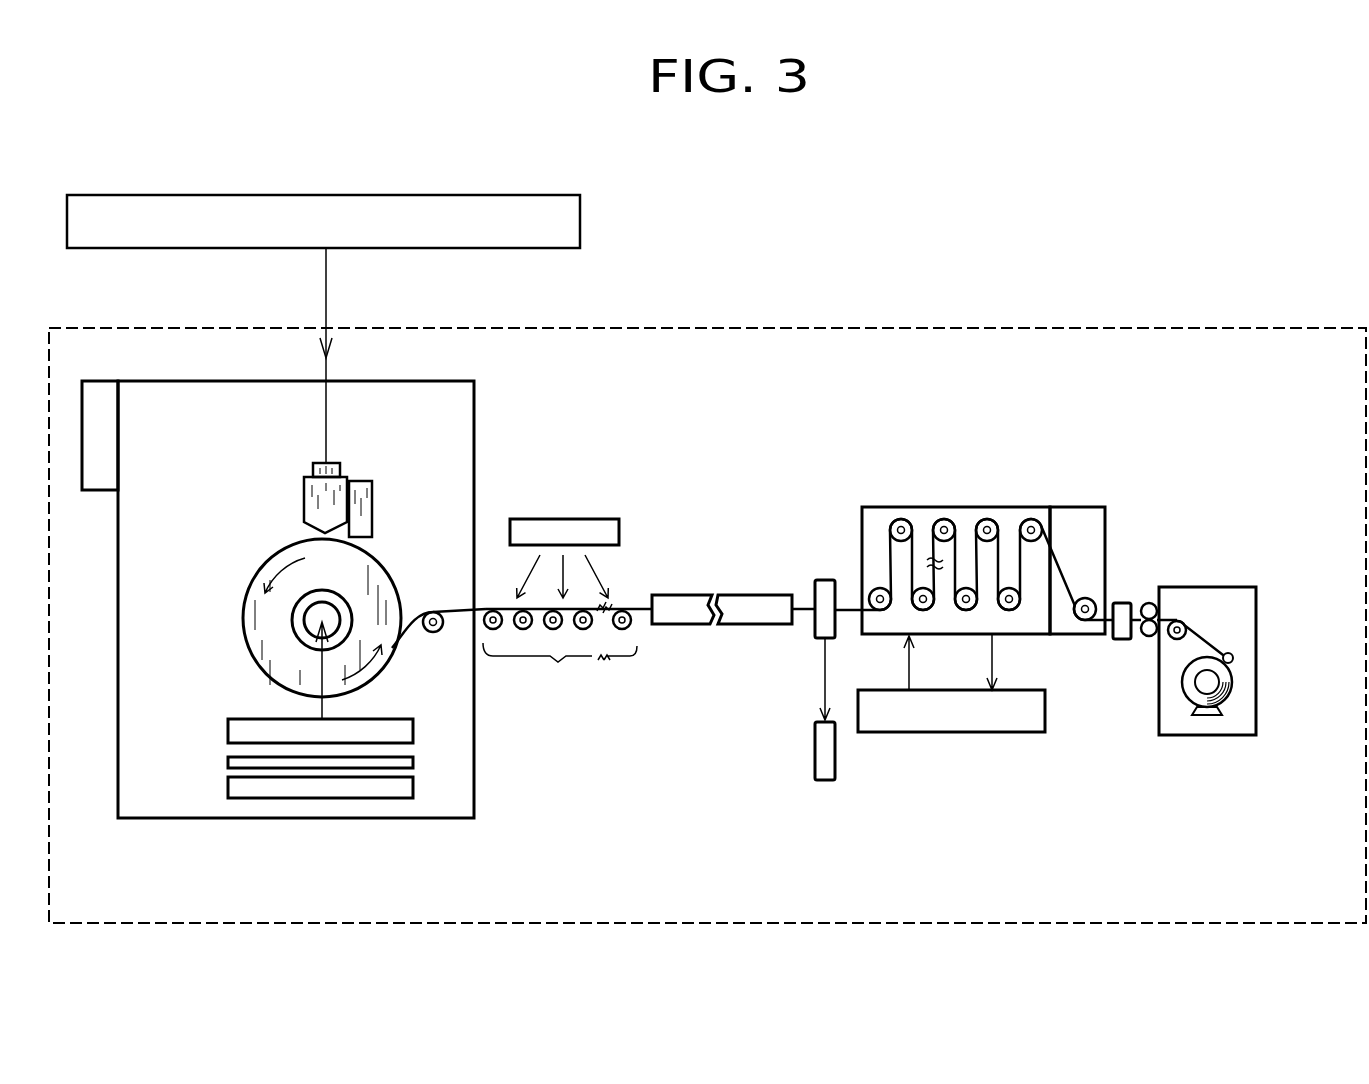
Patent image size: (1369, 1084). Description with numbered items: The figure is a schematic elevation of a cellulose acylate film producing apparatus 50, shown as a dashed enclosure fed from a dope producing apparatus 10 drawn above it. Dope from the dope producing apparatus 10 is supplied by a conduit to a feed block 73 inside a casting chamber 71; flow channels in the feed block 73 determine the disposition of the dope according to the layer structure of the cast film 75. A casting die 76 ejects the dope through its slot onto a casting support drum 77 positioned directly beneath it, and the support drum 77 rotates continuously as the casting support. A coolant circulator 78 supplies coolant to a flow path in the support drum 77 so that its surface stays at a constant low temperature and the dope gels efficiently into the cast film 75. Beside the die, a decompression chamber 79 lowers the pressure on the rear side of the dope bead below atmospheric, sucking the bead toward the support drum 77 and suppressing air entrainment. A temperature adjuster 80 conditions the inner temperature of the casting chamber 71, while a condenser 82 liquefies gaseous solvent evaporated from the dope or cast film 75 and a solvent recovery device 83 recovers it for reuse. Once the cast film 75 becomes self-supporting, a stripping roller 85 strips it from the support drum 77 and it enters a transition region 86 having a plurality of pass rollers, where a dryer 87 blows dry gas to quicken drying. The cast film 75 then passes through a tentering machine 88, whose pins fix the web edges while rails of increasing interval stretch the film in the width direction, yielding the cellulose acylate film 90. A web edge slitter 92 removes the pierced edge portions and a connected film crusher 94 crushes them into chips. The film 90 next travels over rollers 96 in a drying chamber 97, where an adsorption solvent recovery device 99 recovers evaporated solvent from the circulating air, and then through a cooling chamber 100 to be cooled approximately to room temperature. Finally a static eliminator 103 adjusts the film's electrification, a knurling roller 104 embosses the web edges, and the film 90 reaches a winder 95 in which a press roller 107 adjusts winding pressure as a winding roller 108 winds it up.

The dope producing apparatus 10 is at (328, 195).
The cellulose acylate film producing apparatus 50 is at (748, 322).
The casting chamber 71 is at (476, 760).
The feed block 73 is at (318, 463).
The cast film 75 is at (245, 590).
The casting die 76 is at (272, 655).
The casting support drum 77 is at (304, 500).
The coolant circulator 78 is at (230, 733).
The decompression chamber 79 is at (358, 481).
The temperature adjuster 80 is at (97, 492).
The condenser 82 is at (230, 762).
The solvent recovery device 83 is at (230, 787).
The stripping roller 85 is at (434, 611).
The transition region 86 is at (567, 650).
The dryer 87 is at (564, 519).
The tentering machine 88 is at (752, 625).
The cellulose acylate film 90 is at (803, 606).
The web edge slitter 92 is at (825, 580).
The film crusher 94 is at (825, 780).
The winder 95 is at (1210, 587).
The rollers 96 is at (901, 518).
The drying chamber 97 is at (1013, 507).
The adsorption solvent recovery device 99 is at (950, 733).
The cooling chamber 100 is at (1072, 507).
The static eliminator 103 is at (1122, 603).
The knurling roller 104 is at (1149, 603).
The press roller 107 is at (1233, 656).
The winding roller 108 is at (1208, 715).